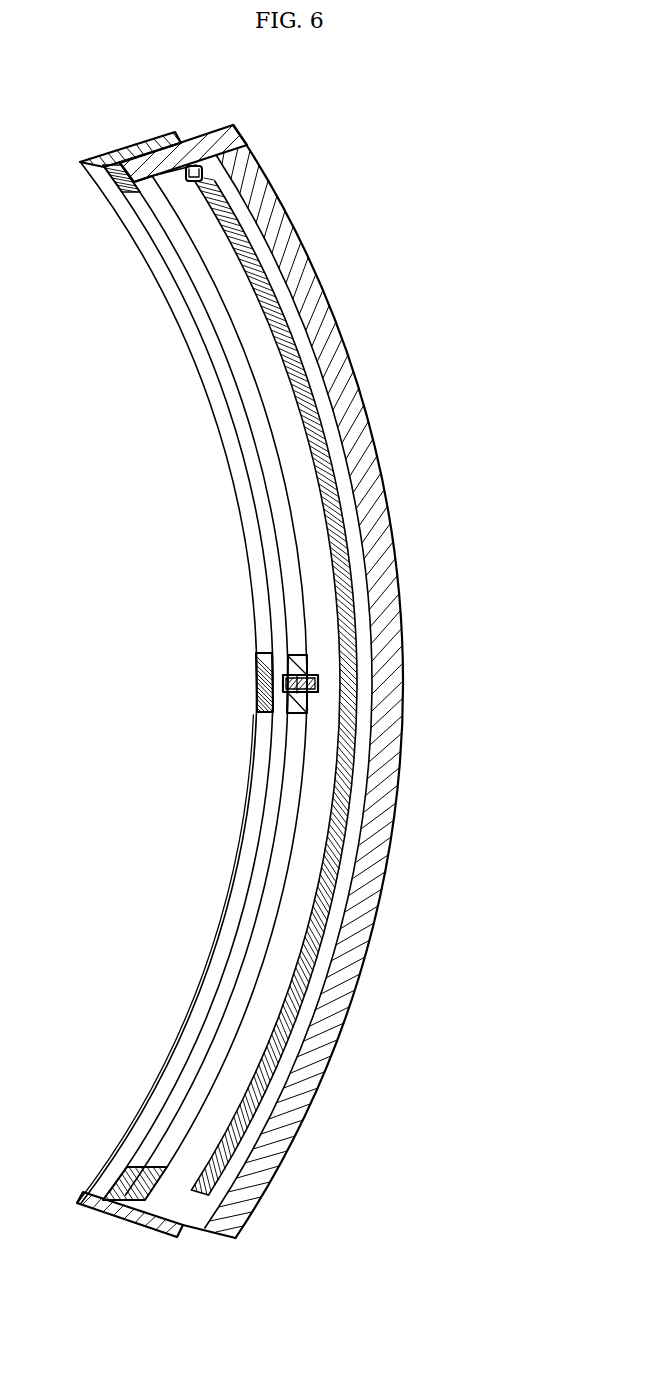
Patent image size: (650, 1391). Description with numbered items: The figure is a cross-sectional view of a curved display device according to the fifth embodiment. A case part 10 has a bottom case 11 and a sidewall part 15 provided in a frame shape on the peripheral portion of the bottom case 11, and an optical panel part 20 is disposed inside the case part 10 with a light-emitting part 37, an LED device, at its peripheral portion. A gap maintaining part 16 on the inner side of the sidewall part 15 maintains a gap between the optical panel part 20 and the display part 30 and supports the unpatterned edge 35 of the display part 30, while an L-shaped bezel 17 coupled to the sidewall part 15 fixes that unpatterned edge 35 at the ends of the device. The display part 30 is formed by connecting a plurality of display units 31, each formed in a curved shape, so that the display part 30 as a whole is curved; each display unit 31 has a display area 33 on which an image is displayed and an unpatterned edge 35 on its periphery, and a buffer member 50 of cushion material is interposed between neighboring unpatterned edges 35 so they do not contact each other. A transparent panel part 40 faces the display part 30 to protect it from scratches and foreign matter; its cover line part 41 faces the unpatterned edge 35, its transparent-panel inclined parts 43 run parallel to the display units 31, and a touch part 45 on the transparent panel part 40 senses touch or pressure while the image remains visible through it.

The case part 10 is at (390, 512).
The bottom case 11 is at (318, 315).
The sidewall part 15 is at (202, 152).
The gap maintaining part 16 is at (196, 200).
The bezel 17 is at (138, 150).
The optical panel part 20 is at (352, 575).
The display part 30 is at (328, 671).
The display unit 31 is at (305, 596).
The display area 33 is at (250, 932).
The unpatterned edge 35 is at (300, 698).
The light-emitting part 37 is at (200, 168).
The transparent panel part 40 is at (186, 699).
The cover line part 41 is at (258, 684).
The transparent-panel inclined part 43 is at (215, 378).
The touch part 45 is at (247, 812).
The buffer member 50 is at (258, 663).